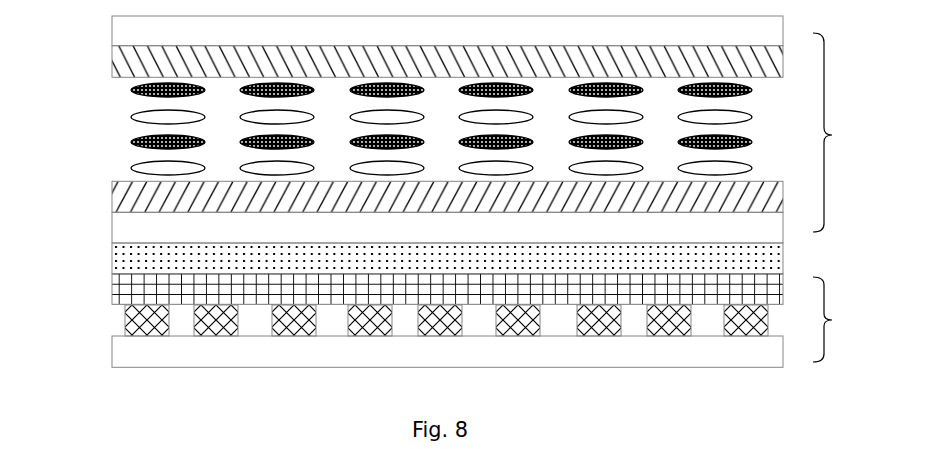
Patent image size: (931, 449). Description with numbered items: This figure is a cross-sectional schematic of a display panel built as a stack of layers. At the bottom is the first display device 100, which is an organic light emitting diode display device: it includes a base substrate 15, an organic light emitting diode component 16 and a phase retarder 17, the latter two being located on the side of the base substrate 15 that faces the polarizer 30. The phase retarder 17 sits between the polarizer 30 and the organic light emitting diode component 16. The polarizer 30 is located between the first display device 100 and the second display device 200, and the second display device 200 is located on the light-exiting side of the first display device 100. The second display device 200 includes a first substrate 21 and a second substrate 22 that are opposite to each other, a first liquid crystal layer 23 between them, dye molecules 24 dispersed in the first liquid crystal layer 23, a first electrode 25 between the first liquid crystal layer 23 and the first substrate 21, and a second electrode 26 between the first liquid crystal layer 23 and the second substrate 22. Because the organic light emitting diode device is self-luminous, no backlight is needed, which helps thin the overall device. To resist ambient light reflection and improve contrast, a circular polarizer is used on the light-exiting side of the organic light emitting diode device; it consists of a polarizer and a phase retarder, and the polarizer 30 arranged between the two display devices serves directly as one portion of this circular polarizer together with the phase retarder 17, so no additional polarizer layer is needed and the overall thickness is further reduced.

The second substrate 22 is at (112, 31).
The second electrode 26 is at (112, 62).
The first liquid crystal layer 23 is at (132, 116).
The dye molecules 24 is at (132, 143).
The first electrode 25 is at (112, 195).
The first substrate 21 is at (112, 229).
The polarizer 30 is at (783, 257).
The phase retarder 17 is at (112, 287).
The organic light emitting diode component 16 is at (125, 322).
The base substrate 15 is at (112, 350).
The second display device 200 is at (842, 132).
The first display device 100 is at (841, 319).